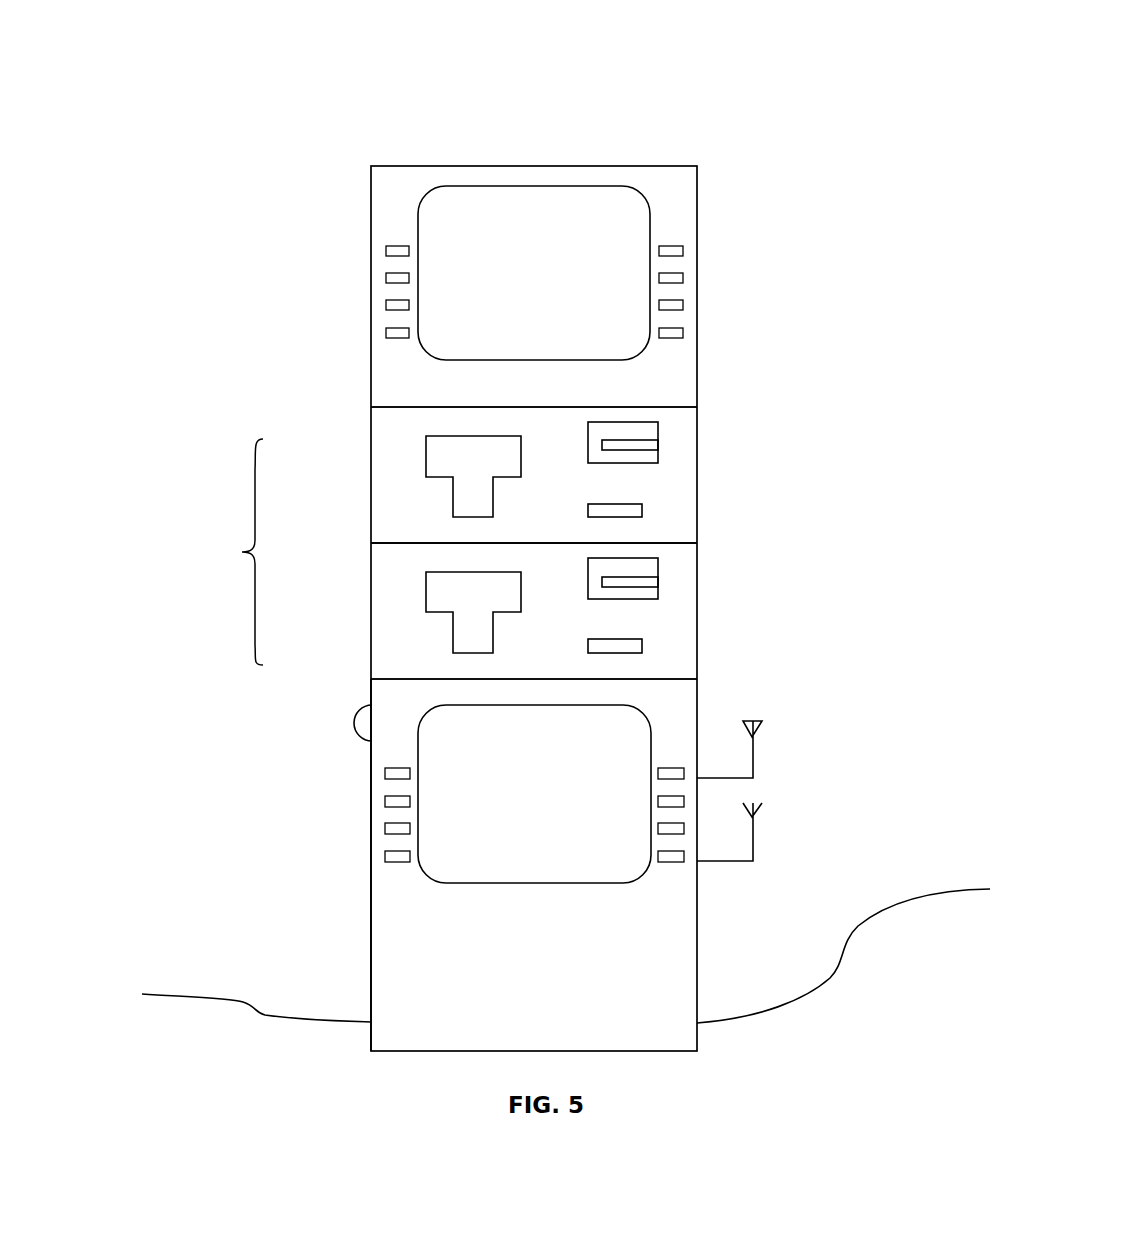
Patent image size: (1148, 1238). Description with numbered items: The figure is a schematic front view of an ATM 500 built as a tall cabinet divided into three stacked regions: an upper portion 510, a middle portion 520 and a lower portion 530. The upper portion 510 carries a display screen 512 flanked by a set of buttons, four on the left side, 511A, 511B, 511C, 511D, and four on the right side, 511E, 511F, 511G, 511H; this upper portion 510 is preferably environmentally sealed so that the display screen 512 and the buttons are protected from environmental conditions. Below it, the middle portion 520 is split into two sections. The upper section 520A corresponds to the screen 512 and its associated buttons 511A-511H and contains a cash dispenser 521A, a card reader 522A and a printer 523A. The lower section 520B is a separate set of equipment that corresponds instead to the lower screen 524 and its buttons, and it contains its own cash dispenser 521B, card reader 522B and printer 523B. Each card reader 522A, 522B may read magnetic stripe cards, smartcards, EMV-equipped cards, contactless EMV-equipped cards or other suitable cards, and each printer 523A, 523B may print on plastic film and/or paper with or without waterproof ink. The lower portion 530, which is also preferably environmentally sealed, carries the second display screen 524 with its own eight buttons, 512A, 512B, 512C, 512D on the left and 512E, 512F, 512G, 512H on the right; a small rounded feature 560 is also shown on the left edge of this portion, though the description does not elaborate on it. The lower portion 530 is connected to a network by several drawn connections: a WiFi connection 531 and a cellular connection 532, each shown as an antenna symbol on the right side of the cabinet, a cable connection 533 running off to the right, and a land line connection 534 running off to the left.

The ATM 500 is at (236, 30).
The upper portion 510 is at (371, 183).
The display screen 512 is at (467, 200).
The button 511A is at (386, 251).
The button 511B is at (386, 278).
The button 511C is at (386, 305).
The button 511D is at (386, 333).
The button 511E is at (683, 251).
The button 511F is at (683, 278).
The button 511G is at (683, 305).
The button 511H is at (683, 333).
The middle portion 520 is at (499, 541).
The upper section 520A is at (371, 473).
The cash dispenser 521A is at (425, 472).
The card reader 522A is at (658, 432).
The printer 523A is at (642, 510).
The lower section 520B is at (371, 608).
The cash dispenser 521B is at (425, 608).
The card reader 522B is at (658, 567).
The printer 523B is at (642, 646).
The knob 560 is at (355, 723).
The lower portion 530 is at (371, 882).
The display screen 524 is at (535, 885).
The button 512A is at (385, 773).
The button 512B is at (385, 801).
The button 512C is at (385, 828).
The button 512D is at (385, 856).
The button 512E is at (658, 773).
The button 512F is at (658, 801).
The button 512G is at (658, 828).
The button 512H is at (658, 856).
The WiFi connection 531 is at (753, 748).
The cellular connection 532 is at (753, 833).
The cable connection 533 is at (929, 893).
The land line connection 534 is at (332, 1020).